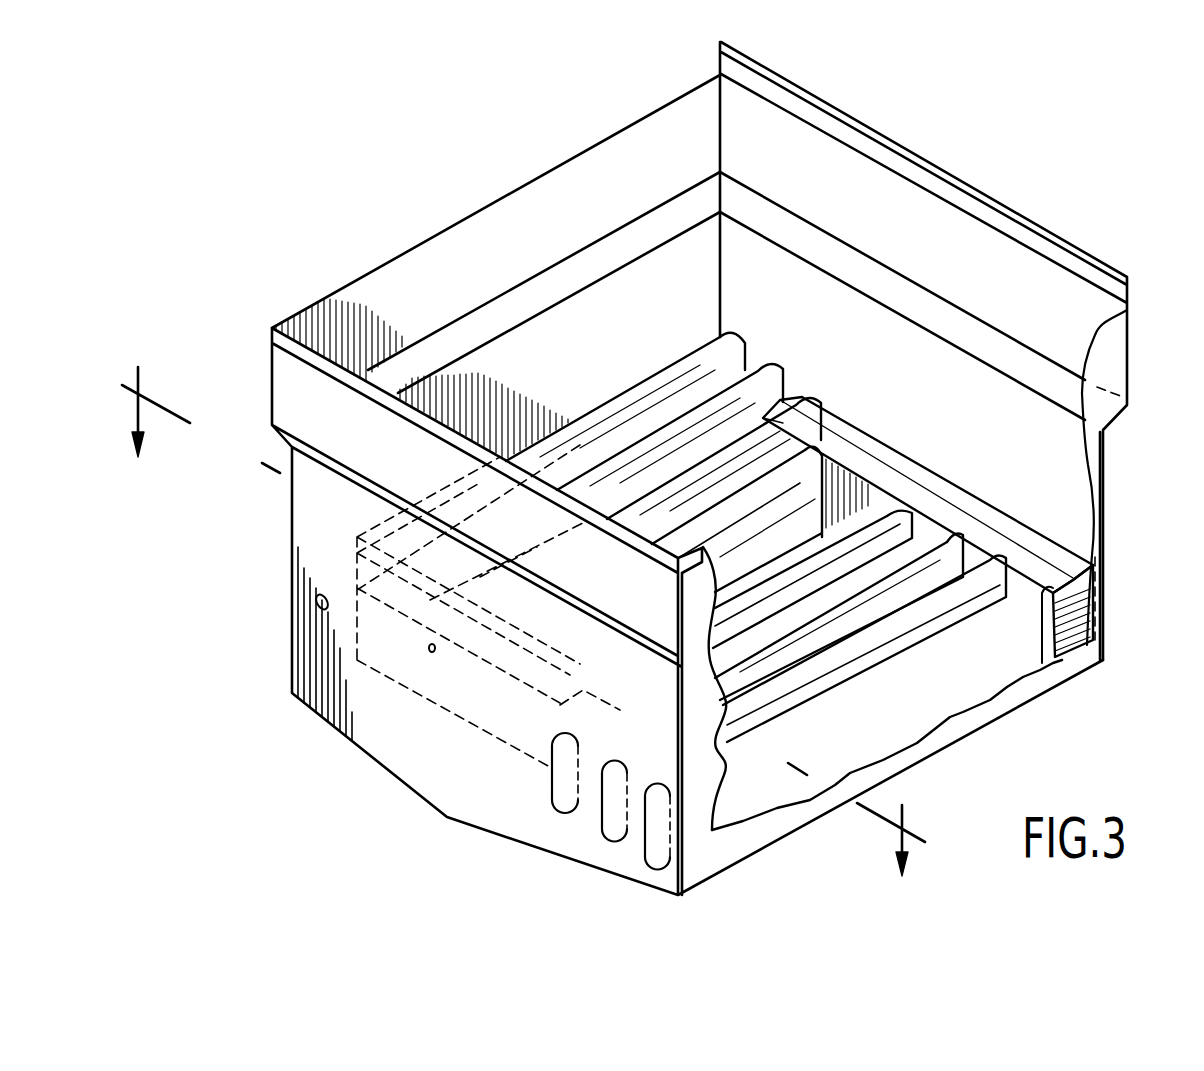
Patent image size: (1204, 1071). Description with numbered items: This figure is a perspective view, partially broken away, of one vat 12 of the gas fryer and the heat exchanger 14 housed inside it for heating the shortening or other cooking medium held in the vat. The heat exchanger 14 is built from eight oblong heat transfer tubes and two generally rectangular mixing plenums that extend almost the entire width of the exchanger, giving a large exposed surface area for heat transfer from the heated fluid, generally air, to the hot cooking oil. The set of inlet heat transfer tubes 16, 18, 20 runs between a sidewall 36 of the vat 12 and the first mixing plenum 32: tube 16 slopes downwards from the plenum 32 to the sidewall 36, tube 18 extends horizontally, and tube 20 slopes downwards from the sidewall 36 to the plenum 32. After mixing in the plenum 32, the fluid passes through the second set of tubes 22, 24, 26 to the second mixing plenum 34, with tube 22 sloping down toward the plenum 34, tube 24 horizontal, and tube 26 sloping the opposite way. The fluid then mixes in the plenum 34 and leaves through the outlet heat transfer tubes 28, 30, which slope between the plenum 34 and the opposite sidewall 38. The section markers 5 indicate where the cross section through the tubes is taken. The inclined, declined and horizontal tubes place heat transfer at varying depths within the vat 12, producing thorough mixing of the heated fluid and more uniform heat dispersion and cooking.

The vat 12 is at (522, 232).
The heat exchanger 14 is at (1065, 528).
The inlet heat transfer tube 16 is at (982, 622).
The inlet heat transfer tube 18 is at (1007, 583).
The inlet heat transfer tube 20 is at (967, 578).
The heat transfer tube 22 is at (878, 518).
The heat transfer tube 24 is at (795, 458).
The heat transfer tube 26 is at (747, 440).
The outlet heat transfer tube 28 is at (715, 402).
The outlet heat transfer tube 30 is at (628, 397).
The mixing plenum 32 is at (832, 427).
The mixing plenum 34 is at (428, 690).
The sidewall 36 is at (317, 415).
The sidewall 38 is at (847, 173).
The section line 5- 5 is at (520, 622).